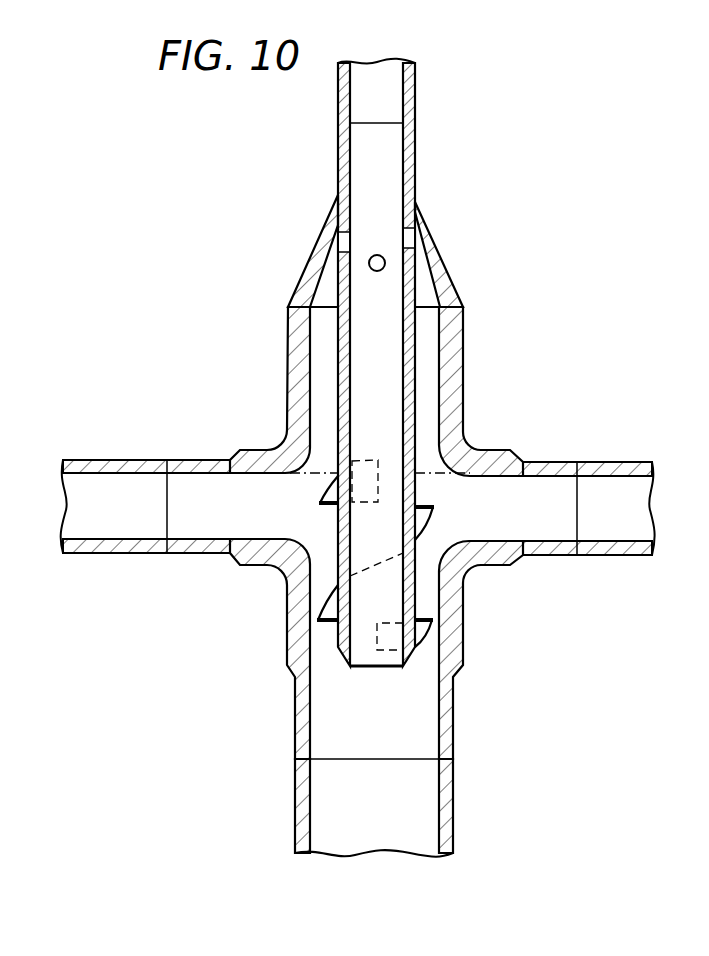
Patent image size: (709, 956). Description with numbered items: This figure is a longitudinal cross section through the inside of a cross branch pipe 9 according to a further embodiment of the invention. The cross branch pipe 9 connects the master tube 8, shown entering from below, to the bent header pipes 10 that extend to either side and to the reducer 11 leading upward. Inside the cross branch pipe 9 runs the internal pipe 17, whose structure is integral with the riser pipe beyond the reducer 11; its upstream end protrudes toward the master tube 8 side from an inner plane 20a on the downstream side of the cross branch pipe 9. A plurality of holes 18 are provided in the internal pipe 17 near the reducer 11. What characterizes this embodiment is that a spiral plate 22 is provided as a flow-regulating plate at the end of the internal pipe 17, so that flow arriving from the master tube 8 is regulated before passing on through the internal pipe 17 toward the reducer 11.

The master tube 8 is at (447, 808).
The cross branch pipe 9 is at (452, 630).
The bent header pipes 10 is at (112, 460).
The reducer 11 is at (446, 262).
The internal pipe 17 is at (413, 430).
The holes 18 is at (340, 260).
The inner plane 20a is at (317, 477).
The spiral plate 22 is at (424, 496).